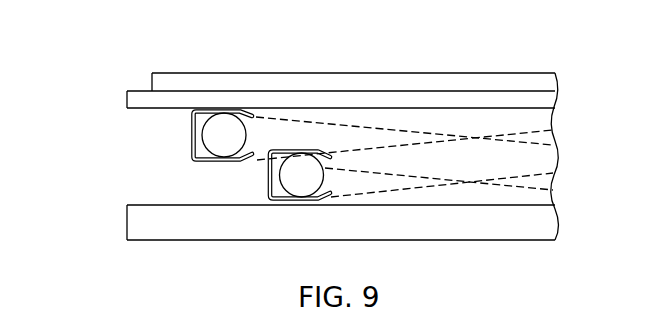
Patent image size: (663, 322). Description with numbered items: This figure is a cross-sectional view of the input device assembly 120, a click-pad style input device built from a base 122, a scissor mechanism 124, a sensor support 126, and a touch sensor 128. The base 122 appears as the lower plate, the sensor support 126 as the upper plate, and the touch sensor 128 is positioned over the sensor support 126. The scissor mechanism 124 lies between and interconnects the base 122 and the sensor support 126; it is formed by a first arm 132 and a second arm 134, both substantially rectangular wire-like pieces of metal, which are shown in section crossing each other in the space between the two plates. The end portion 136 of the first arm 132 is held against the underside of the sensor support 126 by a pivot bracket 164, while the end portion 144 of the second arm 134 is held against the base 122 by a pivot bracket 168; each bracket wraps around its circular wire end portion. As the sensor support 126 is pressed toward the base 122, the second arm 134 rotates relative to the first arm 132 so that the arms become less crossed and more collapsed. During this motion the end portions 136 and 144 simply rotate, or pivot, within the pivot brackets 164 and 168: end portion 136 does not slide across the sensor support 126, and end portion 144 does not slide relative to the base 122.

The input device assembly 120 is at (299, 123).
The base 122 is at (144, 231).
The scissor mechanism 124 is at (186, 153).
The sensor support 126 is at (462, 98).
The touch sensor 128 is at (384, 80).
The first arm 132 is at (337, 120).
The second arm 134 is at (423, 192).
The end portion 136 is at (223, 128).
The end portion 144 is at (300, 186).
The pivot bracket 164 is at (192, 134).
The pivot bracket 168 is at (269, 176).